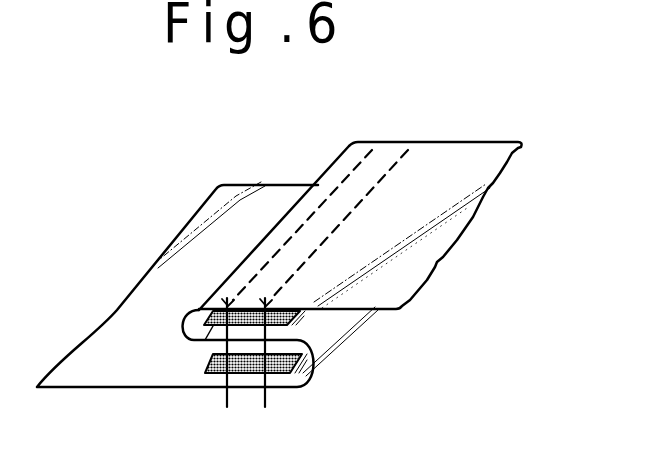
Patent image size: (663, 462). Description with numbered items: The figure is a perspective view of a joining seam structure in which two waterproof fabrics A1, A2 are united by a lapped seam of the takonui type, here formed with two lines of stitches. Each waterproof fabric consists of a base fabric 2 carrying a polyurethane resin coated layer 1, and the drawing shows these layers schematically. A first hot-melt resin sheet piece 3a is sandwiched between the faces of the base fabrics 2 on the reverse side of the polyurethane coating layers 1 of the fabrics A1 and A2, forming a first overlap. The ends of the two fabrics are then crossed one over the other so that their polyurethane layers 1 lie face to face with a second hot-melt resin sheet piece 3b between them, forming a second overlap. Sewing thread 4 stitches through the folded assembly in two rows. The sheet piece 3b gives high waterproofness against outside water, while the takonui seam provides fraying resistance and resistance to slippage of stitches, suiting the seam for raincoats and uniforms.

The polyurethane resin coated layer 1 is at (307, 232).
The base fabric 2 is at (205, 344).
The hot-melt resin sheet piece 3a is at (212, 305).
The hot-melt resin sheet piece 3b is at (306, 376).
The sewing thread 4 is at (410, 158).
The waterproof fabric A1 is at (188, 222).
The waterproof fabric A2 is at (505, 139).